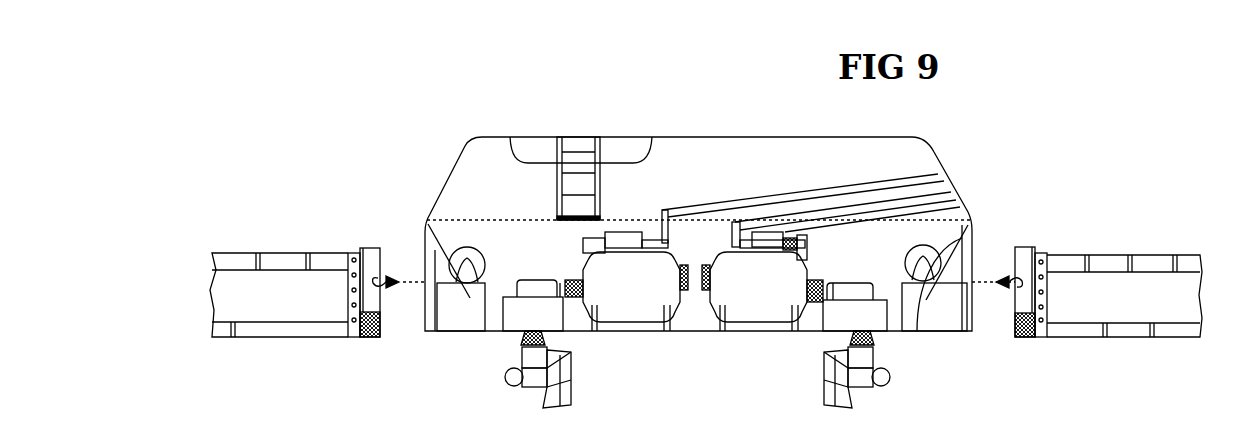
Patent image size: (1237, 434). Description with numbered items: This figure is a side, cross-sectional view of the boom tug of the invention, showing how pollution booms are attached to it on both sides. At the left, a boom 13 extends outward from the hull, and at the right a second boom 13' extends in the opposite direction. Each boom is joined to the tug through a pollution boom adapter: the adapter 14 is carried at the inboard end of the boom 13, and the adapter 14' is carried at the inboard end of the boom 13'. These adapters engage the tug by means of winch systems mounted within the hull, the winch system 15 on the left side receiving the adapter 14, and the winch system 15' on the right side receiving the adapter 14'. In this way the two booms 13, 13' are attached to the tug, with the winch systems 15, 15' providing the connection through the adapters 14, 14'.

The boom 13 is at (285, 335).
The pollution boom adapter 14 is at (343, 261).
The winch system 15 is at (453, 320).
The boom 13' is at (1118, 322).
The pollution boom adapter 14' is at (1039, 267).
The winch system 15' is at (970, 328).